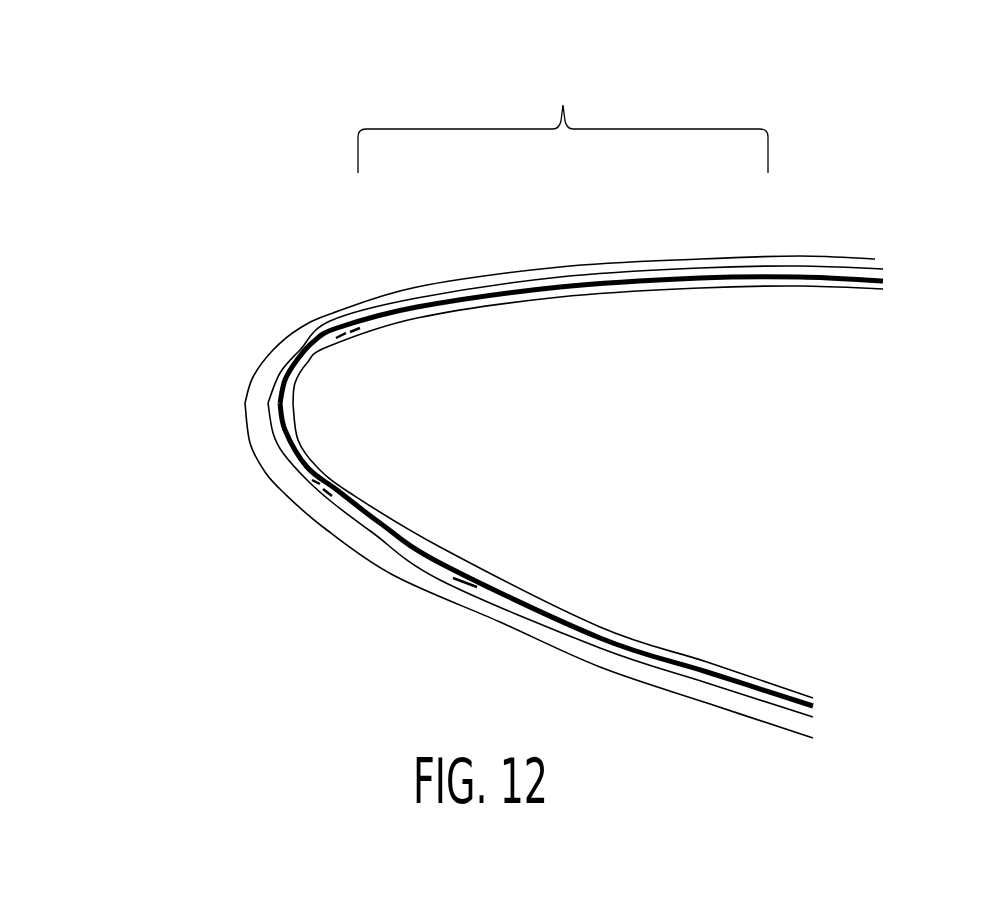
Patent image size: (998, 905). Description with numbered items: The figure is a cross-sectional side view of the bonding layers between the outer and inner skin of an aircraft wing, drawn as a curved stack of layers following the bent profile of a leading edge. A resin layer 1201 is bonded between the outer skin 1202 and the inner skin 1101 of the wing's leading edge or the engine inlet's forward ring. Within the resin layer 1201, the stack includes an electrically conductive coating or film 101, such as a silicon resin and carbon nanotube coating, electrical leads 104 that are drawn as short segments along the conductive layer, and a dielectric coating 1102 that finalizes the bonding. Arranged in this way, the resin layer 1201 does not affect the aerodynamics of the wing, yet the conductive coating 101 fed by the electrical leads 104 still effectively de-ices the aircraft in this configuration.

The resin layer 1201 is at (563, 105).
The outer skin 1202 is at (273, 347).
The electrical leads 104 is at (522, 290).
The electrically conductive coating or film 101 is at (700, 268).
The inner skin 1101 is at (755, 285).
The dielectric coating 1102 is at (562, 288).